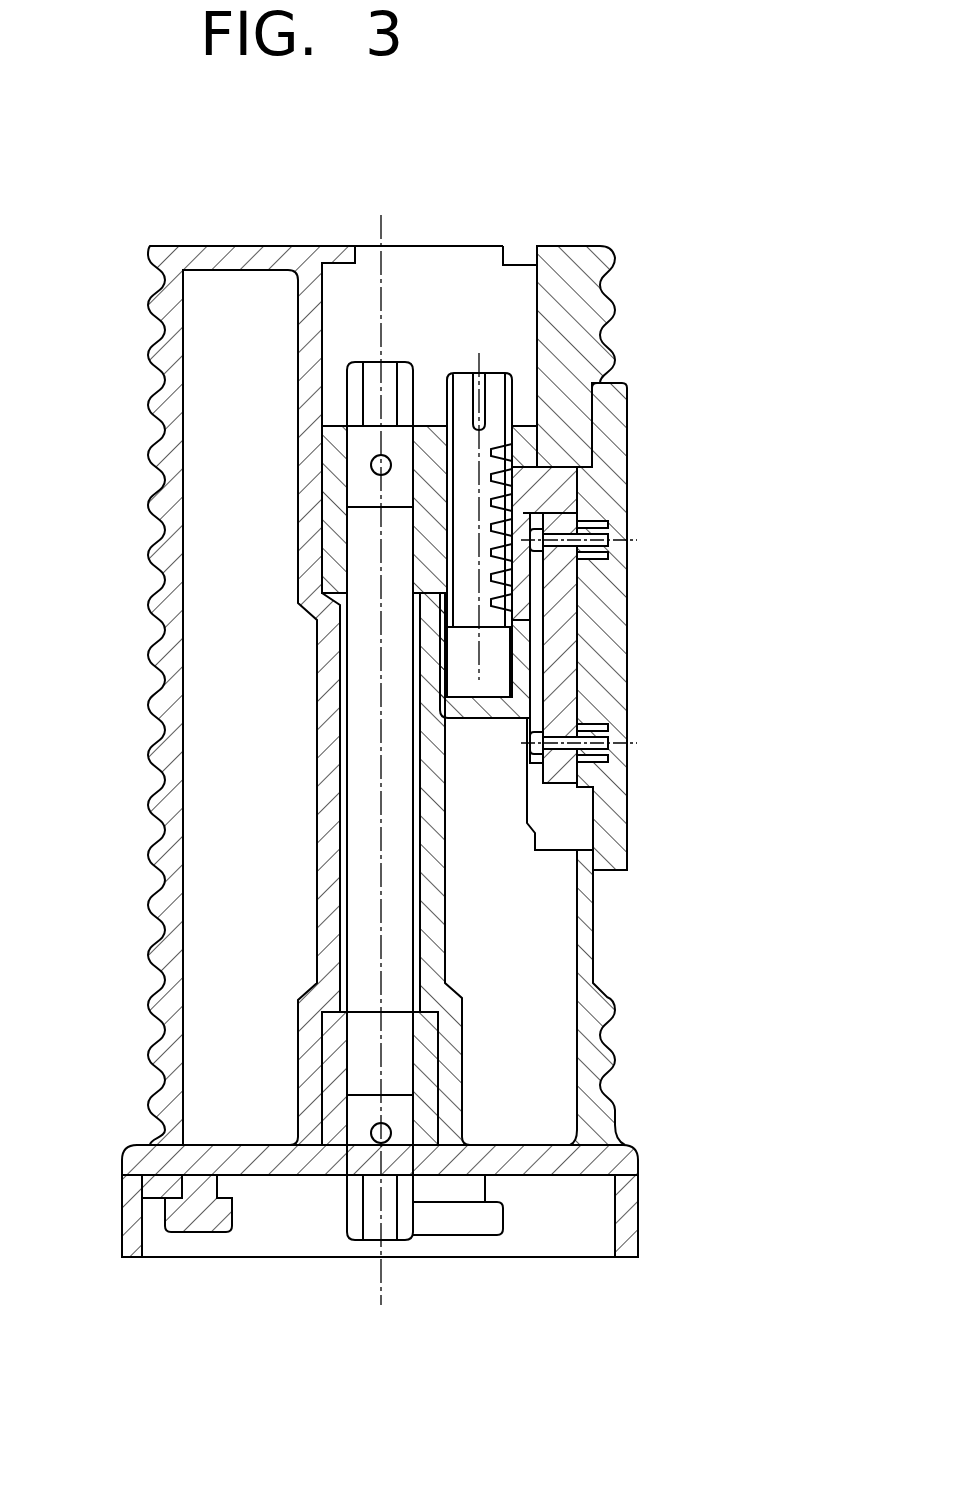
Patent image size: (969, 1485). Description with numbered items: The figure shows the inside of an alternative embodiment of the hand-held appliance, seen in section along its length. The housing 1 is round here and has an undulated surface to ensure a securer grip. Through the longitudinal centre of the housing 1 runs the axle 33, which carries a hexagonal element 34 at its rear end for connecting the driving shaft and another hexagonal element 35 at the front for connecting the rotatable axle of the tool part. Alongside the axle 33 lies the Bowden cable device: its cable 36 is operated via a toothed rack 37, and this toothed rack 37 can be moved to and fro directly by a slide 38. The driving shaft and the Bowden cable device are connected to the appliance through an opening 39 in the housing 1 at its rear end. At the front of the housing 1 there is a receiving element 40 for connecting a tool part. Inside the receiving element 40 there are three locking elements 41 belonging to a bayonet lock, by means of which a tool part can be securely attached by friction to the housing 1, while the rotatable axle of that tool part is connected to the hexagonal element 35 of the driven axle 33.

The housing 1 is at (122, 443).
The axle 33 is at (368, 770).
The hexagonal element 34 is at (387, 362).
The hexagonal element 35 is at (352, 1218).
The cable 36 is at (497, 390).
The toothed rack 37 is at (578, 478).
The slide 38 is at (562, 640).
The opening 39 is at (497, 221).
The receiving element 40 is at (568, 1245).
The locking elements 41 is at (195, 1218).